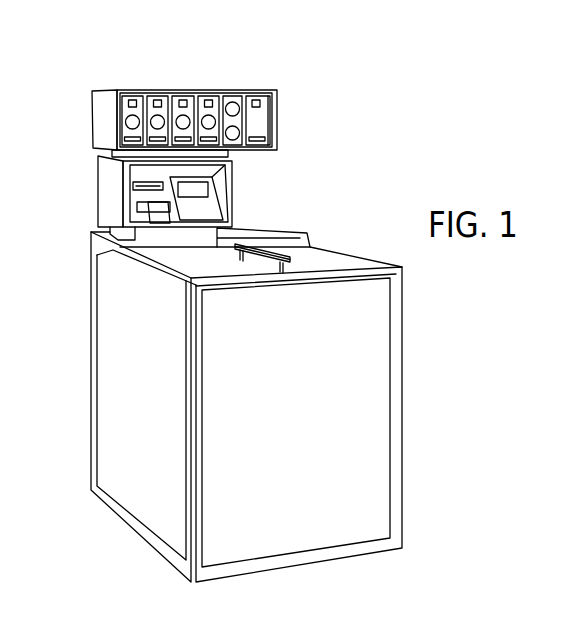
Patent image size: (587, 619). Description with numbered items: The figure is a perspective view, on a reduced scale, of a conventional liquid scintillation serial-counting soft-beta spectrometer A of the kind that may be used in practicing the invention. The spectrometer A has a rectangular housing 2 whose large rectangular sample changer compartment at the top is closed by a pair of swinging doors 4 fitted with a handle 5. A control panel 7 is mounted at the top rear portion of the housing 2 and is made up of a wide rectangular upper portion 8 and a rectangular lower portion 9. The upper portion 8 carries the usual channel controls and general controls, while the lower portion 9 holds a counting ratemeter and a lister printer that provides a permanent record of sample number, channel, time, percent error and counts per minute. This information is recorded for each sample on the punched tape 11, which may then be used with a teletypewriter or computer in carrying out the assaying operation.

The liquid scintillation spectrometer A is at (78, 345).
The housing 2 is at (115, 278).
The swinging doors 4 is at (190, 262).
The handle 5 is at (265, 240).
The control panel 7 is at (113, 90).
The upper portion 8 is at (277, 119).
The lower portion 9 is at (112, 187).
The punched tape 11 is at (152, 218).